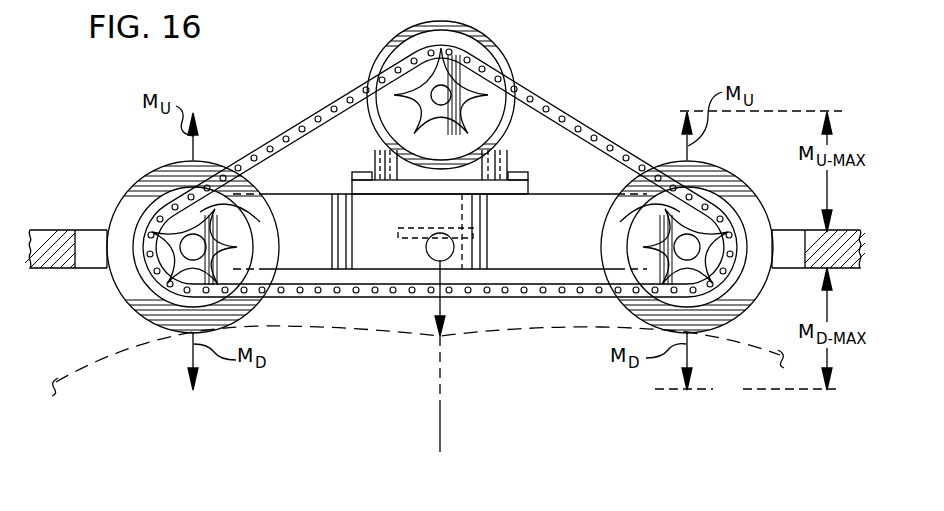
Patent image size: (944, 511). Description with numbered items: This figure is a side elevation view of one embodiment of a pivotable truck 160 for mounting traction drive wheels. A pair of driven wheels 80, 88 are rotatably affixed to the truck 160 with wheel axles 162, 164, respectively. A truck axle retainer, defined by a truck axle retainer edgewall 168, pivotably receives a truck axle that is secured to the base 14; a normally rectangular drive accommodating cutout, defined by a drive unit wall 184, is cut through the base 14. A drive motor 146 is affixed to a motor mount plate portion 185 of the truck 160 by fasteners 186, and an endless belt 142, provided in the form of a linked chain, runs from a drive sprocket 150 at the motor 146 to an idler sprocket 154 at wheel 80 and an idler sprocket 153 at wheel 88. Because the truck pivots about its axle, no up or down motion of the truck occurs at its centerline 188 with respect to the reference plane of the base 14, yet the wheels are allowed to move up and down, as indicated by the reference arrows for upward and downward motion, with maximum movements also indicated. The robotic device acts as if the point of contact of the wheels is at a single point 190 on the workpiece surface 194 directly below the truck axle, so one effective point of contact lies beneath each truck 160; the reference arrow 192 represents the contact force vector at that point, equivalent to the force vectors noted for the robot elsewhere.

The base 14 is at (50, 230).
The wheel 80 is at (191, 163).
The wheel 88 is at (712, 168).
The endless belt 142 is at (558, 113).
The drive motor 146 is at (490, 40).
The drive sprocket 150 is at (401, 103).
The idler sprocket 153 is at (640, 230).
The idler sprocket 154 is at (255, 232).
The pivotable truck 160 is at (560, 257).
The wheel axle 162 is at (188, 236).
The wheel axle 164 is at (702, 258).
The truck axle retainer edgewall 168 is at (428, 252).
The drive unit wall 184 is at (96, 230).
The motor mount plate portion 185 is at (530, 190).
The fasteners 186 is at (352, 176).
The centerline 188 is at (440, 404).
The single point 190 is at (442, 340).
The reference arrow 192 is at (442, 302).
The workpiece surface 194 is at (576, 330).